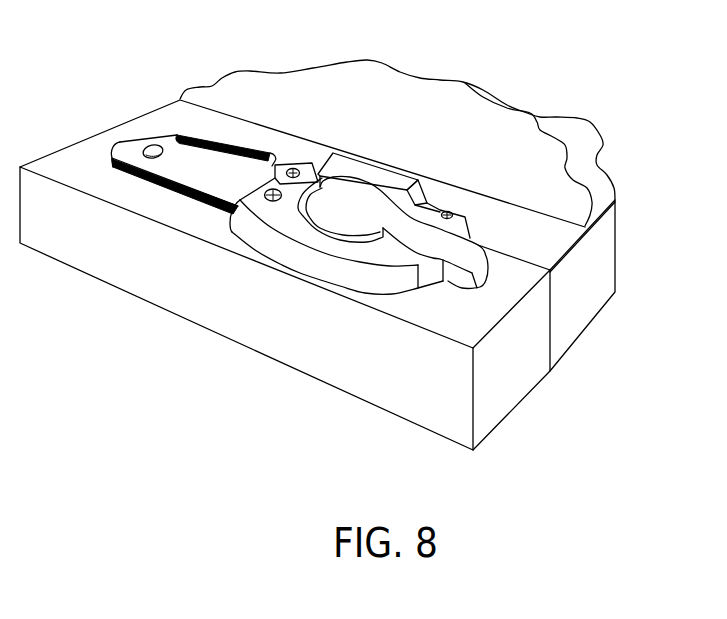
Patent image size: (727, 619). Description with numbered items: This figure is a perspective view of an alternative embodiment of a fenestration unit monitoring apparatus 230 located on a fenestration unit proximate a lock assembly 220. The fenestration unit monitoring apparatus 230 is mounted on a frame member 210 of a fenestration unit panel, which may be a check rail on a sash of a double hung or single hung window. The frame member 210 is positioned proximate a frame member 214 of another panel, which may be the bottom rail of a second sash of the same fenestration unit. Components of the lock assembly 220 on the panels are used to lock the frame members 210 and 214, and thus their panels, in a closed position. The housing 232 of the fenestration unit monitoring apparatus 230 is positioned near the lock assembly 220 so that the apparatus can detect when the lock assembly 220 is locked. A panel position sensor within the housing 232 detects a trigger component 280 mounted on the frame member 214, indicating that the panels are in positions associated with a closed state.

The frame member 210 is at (513, 360).
The frame member 214 is at (585, 281).
The lock assembly 220 is at (340, 282).
The fenestration unit monitoring apparatus 230 is at (175, 207).
The housing 232 is at (127, 141).
The trigger component 280 is at (228, 148).